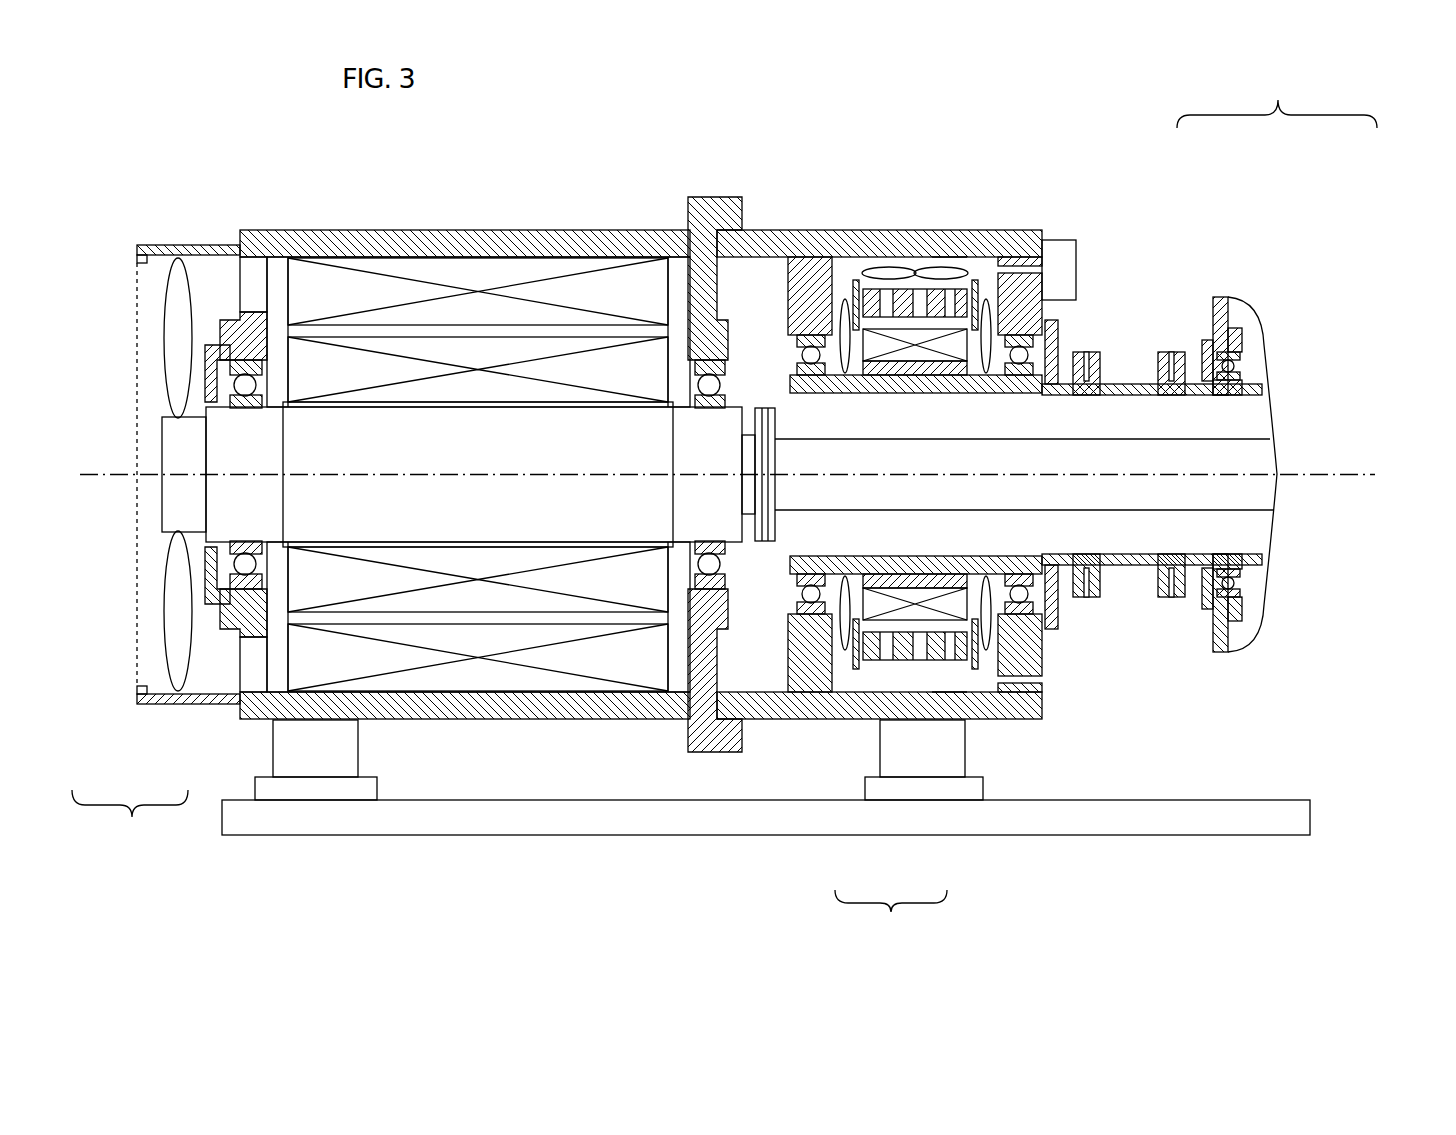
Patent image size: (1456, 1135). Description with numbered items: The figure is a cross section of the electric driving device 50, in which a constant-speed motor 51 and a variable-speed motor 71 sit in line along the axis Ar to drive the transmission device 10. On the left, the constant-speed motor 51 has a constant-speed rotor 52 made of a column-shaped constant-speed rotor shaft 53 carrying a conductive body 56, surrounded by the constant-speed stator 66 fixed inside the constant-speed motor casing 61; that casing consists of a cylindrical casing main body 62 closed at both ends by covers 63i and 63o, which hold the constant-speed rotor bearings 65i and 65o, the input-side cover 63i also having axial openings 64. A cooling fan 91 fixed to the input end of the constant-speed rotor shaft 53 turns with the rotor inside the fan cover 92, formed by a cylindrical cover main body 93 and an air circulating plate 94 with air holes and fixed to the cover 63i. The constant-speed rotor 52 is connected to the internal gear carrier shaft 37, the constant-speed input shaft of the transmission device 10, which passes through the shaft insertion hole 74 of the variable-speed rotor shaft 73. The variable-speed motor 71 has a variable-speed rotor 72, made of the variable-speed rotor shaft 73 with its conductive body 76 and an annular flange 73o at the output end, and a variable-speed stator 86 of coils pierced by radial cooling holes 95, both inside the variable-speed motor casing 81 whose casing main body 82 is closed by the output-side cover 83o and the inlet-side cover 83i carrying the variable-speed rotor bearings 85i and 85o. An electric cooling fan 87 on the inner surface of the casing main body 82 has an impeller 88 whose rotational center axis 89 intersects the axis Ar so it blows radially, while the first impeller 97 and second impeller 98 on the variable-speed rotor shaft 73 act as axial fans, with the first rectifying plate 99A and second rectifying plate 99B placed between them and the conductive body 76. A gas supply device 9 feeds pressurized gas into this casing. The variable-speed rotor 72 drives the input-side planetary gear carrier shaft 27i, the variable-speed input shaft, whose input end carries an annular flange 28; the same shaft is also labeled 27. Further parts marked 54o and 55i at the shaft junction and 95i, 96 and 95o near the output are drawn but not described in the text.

The gas supply device 9 is at (1062, 240).
The transmission device 10 is at (1283, 603).
The output shaft axis side 27 is at (1252, 563).
The input-side planetary gear carrier shaft 27i is at (1265, 342).
The annular flange 28 is at (1218, 298).
The internal gear carrier shaft 37 is at (1207, 500).
The electric driving device 50 is at (250, 222).
The constant-speed motor 51 is at (267, 193).
The constant-speed rotor 52 is at (403, 627).
The constant-speed rotor shaft 53 is at (575, 522).
The motor shaft 54o is at (761, 407).
The coupling 55i is at (773, 407).
The conductive body 56 is at (490, 600).
The constant-speed motor casing 61 is at (506, 222).
The casing main body 62 is at (552, 247).
The cover 63i is at (243, 282).
The cover 63o is at (700, 203).
The openings 64 is at (207, 247).
The constant-speed rotor bearing 65i is at (253, 380).
The constant-speed rotor bearing 65o is at (698, 382).
The constant-speed stator 66 is at (448, 275).
The variable-speed motor 71 is at (1015, 240).
The variable-speed rotor 72 is at (891, 923).
The variable-speed rotor shaft 73 is at (880, 582).
The annular flange 73o is at (1082, 351).
The shaft insertion hole 74 is at (823, 557).
The conductive body 76 is at (925, 614).
The variable-speed motor casing 81 is at (907, 222).
The casing main body 82 is at (932, 256).
The inlet-side cover 83i is at (812, 270).
The output-side cover 83o is at (1025, 226).
The variable-speed rotor bearing 85i is at (808, 356).
The variable-speed rotor bearing 85o is at (1070, 298).
The variable-speed stator 86 is at (944, 661).
The electric cooling fan 87 is at (957, 257).
The impeller 88 is at (892, 267).
The rotational center axis 89 is at (928, 264).
The cooling fan 91 is at (170, 247).
The fan cover 92 is at (130, 825).
The cover main body 93 is at (163, 710).
The air circulating plate 94 is at (137, 640).
The cooling holes 95 is at (878, 303).
The inner seal tube 95i is at (1140, 384).
The outer seal 95o is at (1207, 342).
The seal ring 96 is at (1167, 352).
The first impeller 97 is at (843, 372).
The second impeller 98 is at (986, 300).
The first rectifying plate 99A is at (852, 660).
The second rectifying plate 99B is at (978, 660).
The axis Ar is at (1312, 468).